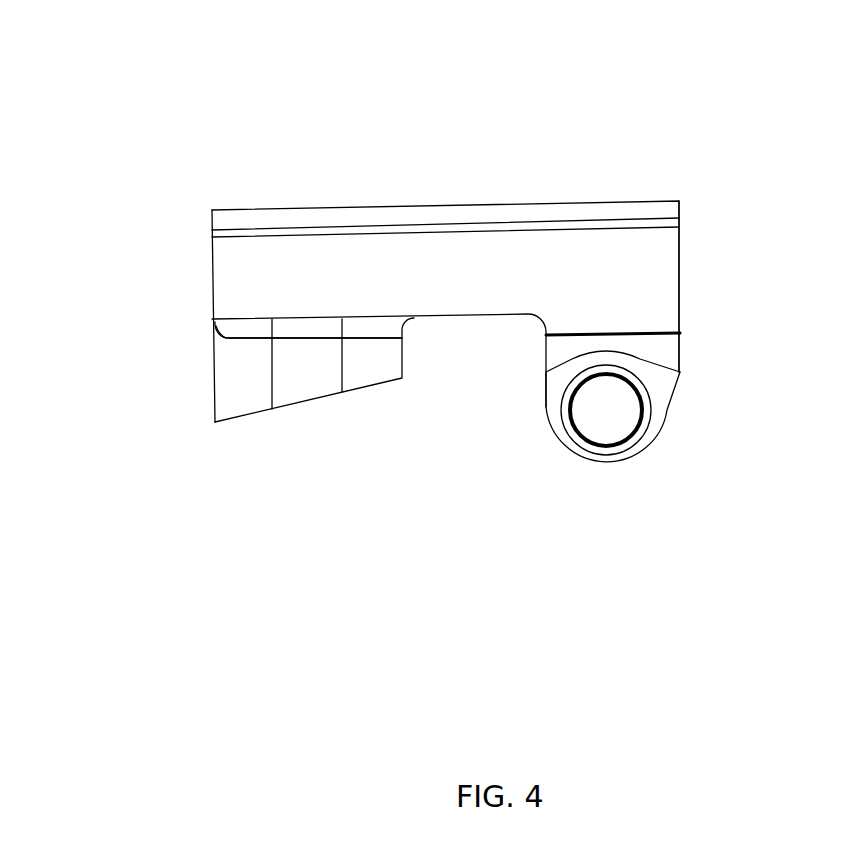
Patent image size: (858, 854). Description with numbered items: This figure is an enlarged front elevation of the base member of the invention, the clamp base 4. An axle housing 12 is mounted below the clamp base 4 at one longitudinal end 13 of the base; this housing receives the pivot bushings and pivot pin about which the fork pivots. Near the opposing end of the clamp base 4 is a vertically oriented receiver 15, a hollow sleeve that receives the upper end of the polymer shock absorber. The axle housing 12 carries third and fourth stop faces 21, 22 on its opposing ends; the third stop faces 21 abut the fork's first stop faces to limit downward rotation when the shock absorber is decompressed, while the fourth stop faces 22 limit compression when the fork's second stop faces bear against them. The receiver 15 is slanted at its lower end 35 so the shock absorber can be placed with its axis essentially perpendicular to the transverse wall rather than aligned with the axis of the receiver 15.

The clamp base 4 is at (452, 251).
The axle housing 12 is at (683, 357).
The longitudinal end 13 is at (681, 269).
The receiver 15 is at (213, 377).
The third stop face 21 is at (656, 365).
The fourth stop face 22 is at (556, 370).
The lower end 35 is at (303, 403).